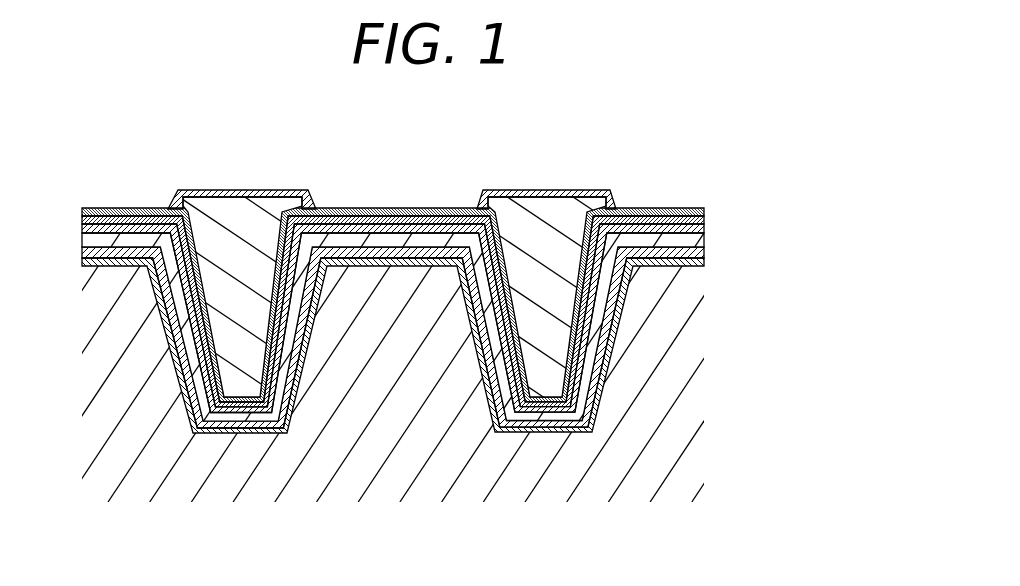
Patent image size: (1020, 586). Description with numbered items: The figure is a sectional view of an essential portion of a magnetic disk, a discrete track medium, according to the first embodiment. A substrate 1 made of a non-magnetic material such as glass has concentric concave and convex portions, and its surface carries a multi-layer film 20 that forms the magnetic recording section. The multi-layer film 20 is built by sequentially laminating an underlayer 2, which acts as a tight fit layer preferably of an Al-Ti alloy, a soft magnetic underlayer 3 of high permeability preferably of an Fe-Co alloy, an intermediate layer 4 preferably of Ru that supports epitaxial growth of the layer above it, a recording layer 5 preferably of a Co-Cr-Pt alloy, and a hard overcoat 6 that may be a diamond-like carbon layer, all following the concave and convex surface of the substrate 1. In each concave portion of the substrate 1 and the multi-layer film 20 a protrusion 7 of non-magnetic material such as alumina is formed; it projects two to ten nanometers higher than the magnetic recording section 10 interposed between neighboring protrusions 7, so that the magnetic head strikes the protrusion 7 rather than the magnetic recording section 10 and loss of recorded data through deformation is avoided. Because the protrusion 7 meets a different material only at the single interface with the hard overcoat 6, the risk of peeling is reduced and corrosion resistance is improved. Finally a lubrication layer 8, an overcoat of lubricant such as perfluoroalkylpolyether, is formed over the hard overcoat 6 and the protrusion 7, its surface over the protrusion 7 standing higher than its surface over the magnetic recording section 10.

The substrate 1 is at (703, 482).
The underlayer 2 is at (705, 262).
The soft magnetic underlayer 3 is at (705, 252).
The intermediate layer 4 is at (705, 241).
The recording layer 5 is at (705, 228).
The hard overcoat 6 is at (805, 307).
The protrusion 7 is at (552, 224).
The lubrication layer 8 is at (705, 212).
The magnetic recording section 10 is at (400, 209).
The multi-layer film 20 is at (467, 335).